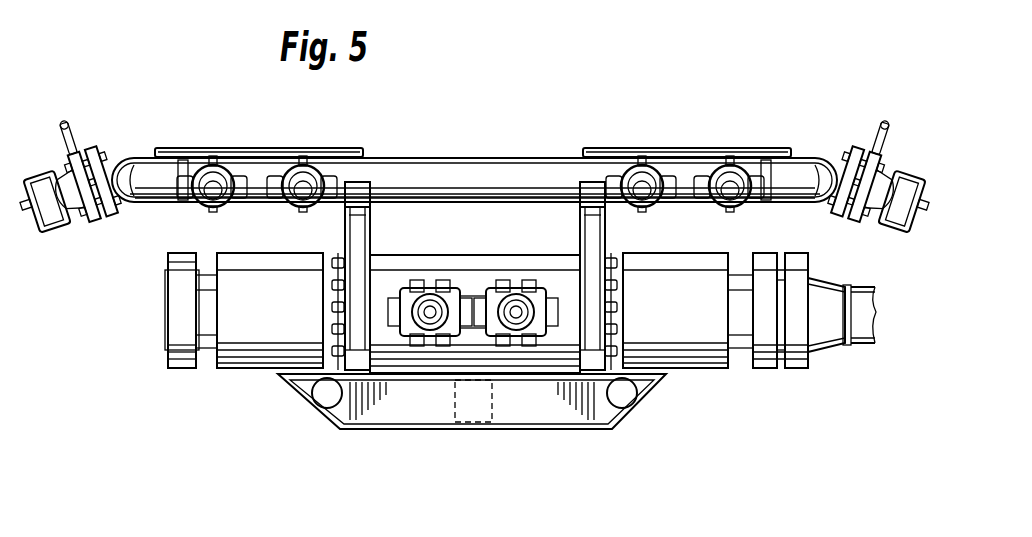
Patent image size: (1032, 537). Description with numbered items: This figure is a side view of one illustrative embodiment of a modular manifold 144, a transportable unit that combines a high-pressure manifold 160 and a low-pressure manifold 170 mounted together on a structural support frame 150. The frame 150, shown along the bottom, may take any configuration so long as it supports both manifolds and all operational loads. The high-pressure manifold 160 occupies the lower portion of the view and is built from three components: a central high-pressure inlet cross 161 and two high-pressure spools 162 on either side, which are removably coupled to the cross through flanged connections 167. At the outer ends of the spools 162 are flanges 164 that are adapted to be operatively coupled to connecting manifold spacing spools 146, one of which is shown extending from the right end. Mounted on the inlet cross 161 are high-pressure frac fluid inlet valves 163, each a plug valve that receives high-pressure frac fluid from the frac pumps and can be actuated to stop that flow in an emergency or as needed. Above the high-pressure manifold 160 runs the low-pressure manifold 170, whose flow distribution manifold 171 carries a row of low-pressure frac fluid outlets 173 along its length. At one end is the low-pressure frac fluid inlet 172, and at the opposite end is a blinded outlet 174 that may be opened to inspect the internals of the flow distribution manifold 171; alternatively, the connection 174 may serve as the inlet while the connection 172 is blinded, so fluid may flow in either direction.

The modular manifold 144 is at (214, 98).
The connecting manifold spacing spool 146 is at (866, 322).
The structural support frame 150 is at (482, 426).
The high-pressure manifold 160 is at (713, 376).
The high-pressure inlet cross 161 is at (458, 256).
The high-pressure spool 162 is at (266, 366).
The high-pressure frac fluid inlet valve 163 is at (430, 318).
The flange 164 is at (180, 362).
The flanged connection 167 is at (328, 405).
The low-pressure manifold 170 is at (515, 130).
The flow distribution manifold 171 is at (463, 157).
The low-pressure frac fluid inlet 172 is at (852, 215).
The low-pressure frac fluid outlet 173 is at (776, 228).
The blinded outlet 174 is at (97, 215).